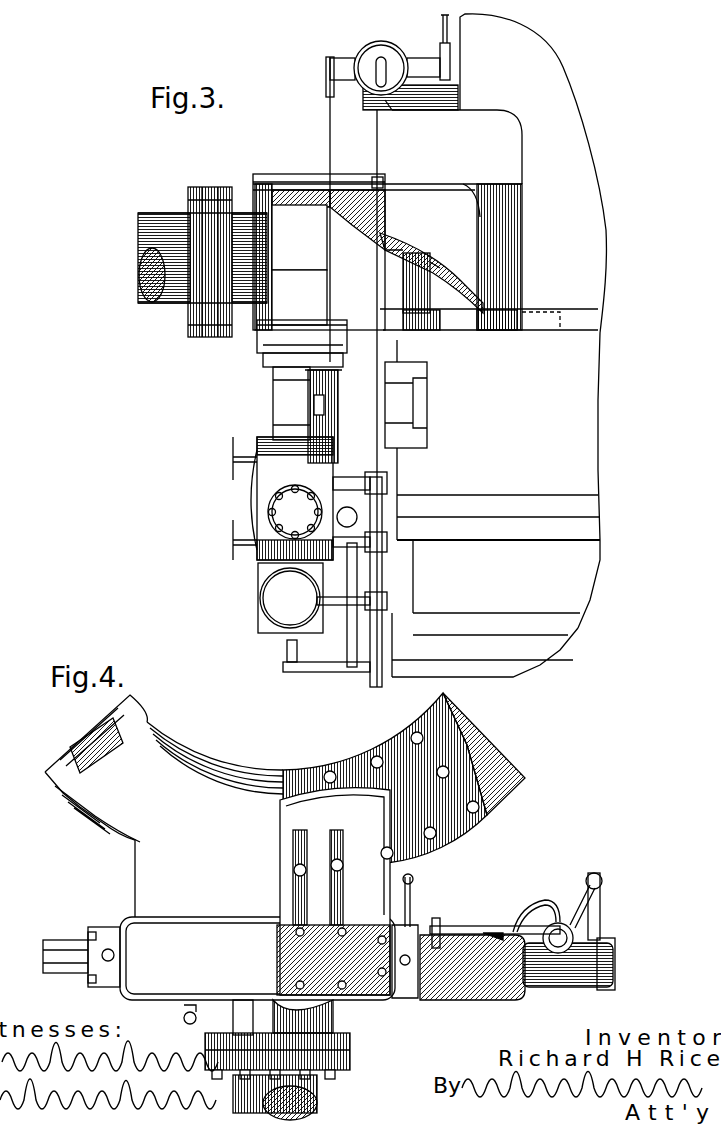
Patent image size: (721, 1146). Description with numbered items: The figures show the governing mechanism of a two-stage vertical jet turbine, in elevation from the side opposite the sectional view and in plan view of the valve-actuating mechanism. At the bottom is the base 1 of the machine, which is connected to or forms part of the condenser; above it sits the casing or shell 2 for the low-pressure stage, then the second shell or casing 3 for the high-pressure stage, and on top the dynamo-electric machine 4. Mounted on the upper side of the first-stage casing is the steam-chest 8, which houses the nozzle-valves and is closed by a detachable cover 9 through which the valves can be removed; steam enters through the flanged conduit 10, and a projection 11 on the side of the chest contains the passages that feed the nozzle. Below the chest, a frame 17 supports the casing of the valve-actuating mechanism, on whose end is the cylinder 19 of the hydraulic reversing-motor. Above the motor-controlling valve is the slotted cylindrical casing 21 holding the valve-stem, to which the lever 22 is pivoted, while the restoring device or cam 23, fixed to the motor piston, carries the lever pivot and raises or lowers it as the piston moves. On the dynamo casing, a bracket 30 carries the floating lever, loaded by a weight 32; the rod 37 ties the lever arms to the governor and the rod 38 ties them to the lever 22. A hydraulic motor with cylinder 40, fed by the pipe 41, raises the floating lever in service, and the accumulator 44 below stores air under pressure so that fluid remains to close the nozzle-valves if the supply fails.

In FIG. 3, the base 1 is at (503, 670).
In FIG. 3, the casing or shell 2 is at (506, 587).
In FIG. 3, the second shell or casing 3 is at (492, 440).
In FIG. 3, the dynamo-electric machine 4 is at (429, 277).
In FIG. 3, the steam-chest 8 is at (302, 318).
In FIG. 3, the detachable cover 9 is at (302, 213).
In FIG. 4, the detachable cover 9 is at (365, 997).
In FIG. 3, the conduit 10 is at (150, 262).
In FIG. 4, the conduit 10 is at (318, 1088).
In FIG. 3, the projection 11 is at (467, 290).
In FIG. 4, the projection 11 is at (318, 770).
In FIG. 3, the frame 17 is at (280, 390).
In FIG. 3, the cylinder 19 is at (252, 530).
In FIG. 4, the cylinder 19 is at (555, 975).
In FIG. 3, the slotted cylindrical casing 21 is at (340, 430).
In FIG. 4, the slotted cylindrical casing 21 is at (605, 913).
In FIG. 4, the lever 22 is at (480, 915).
In FIG. 4, the restoring device or cam 23 is at (497, 972).
In FIG. 3, the bracket 30 is at (437, 110).
In FIG. 3, the weight 32 is at (378, 48).
In FIG. 3, the rod 37 is at (441, 33).
In FIG. 3, the rod 38 is at (327, 144).
In FIG. 4, the rod 38 is at (440, 925).
In FIG. 3, the cylinder 40 is at (392, 115).
In FIG. 3, the pipe 41 is at (385, 165).
In FIG. 4, the pipe 41 is at (413, 880).
In FIG. 3, the accumulator 44 is at (272, 600).